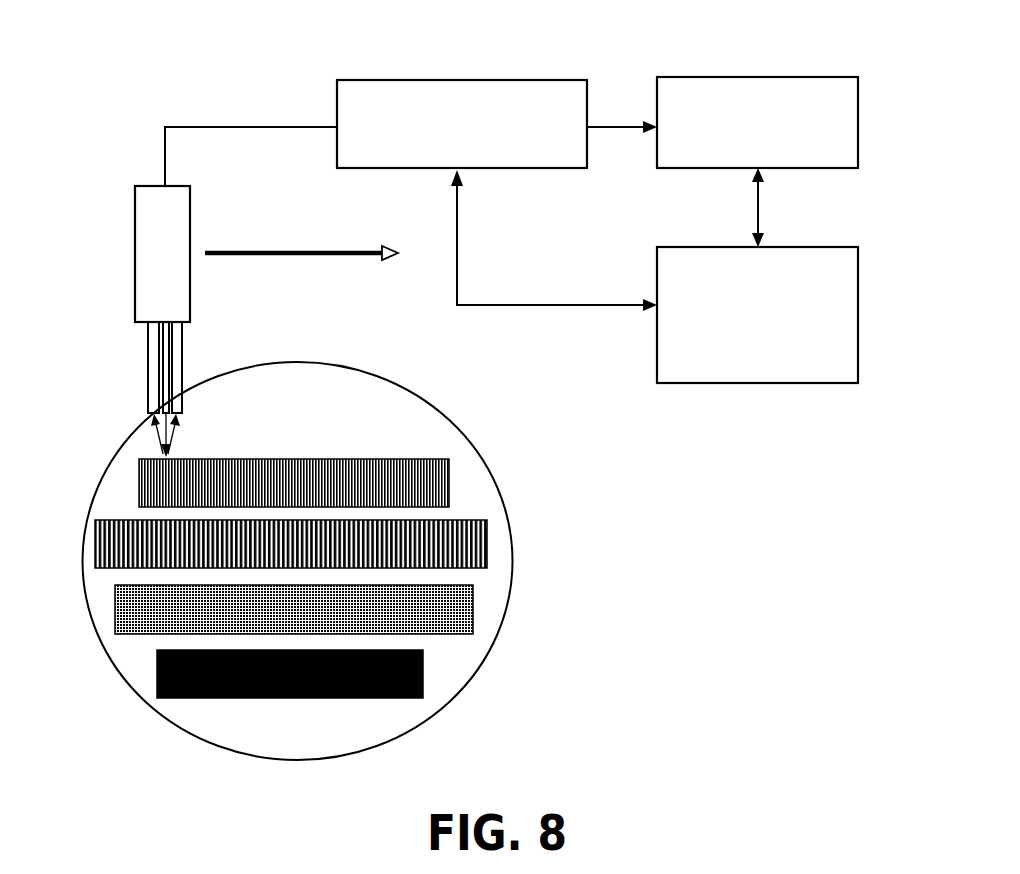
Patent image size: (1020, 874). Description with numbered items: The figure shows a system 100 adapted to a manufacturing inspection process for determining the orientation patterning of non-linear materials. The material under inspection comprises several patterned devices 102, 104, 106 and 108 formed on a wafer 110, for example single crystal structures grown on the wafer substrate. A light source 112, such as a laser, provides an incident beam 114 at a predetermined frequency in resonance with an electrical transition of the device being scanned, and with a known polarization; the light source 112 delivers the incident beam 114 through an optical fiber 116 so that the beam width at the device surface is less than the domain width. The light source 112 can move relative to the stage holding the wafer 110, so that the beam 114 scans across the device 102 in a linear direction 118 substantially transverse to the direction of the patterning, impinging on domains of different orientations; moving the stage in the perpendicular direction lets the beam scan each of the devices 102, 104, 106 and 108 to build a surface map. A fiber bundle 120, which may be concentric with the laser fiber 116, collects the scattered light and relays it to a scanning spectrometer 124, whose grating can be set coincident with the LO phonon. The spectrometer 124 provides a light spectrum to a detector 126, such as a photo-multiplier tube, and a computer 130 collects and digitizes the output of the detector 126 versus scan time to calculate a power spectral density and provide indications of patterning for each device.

The system 100 is at (178, 60).
The patterned device 102 is at (340, 460).
The patterned device 104 is at (487, 540).
The patterned device 106 is at (473, 608).
The patterned device 108 is at (268, 700).
The wafer 110 is at (103, 479).
The light source 112 is at (140, 233).
The incident beam 114 is at (177, 434).
The optical fiber 116 is at (167, 372).
The linear direction 118 is at (273, 252).
The fiber bundle 120 is at (148, 360).
The scanning spectrometer 124 is at (515, 80).
The detector 126 is at (760, 77).
The computer 130 is at (822, 247).